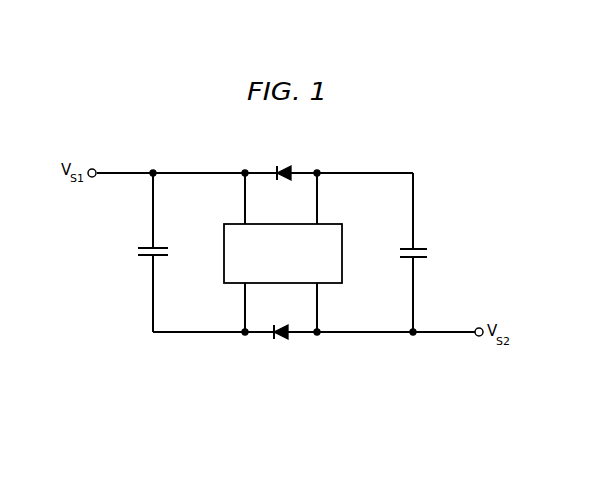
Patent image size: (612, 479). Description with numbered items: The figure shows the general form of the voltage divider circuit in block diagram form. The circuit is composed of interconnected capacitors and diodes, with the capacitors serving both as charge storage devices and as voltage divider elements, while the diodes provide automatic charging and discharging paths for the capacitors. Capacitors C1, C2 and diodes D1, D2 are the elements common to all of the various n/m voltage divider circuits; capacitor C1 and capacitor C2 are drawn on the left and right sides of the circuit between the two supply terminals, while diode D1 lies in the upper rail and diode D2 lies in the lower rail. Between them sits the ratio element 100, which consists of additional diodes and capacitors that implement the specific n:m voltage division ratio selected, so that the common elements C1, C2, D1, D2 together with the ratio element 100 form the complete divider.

The ratio element 100 is at (343, 243).
The diode D1 is at (283, 162).
The diode D2 is at (282, 343).
The capacitor C1 is at (145, 253).
The capacitor C2 is at (424, 255).